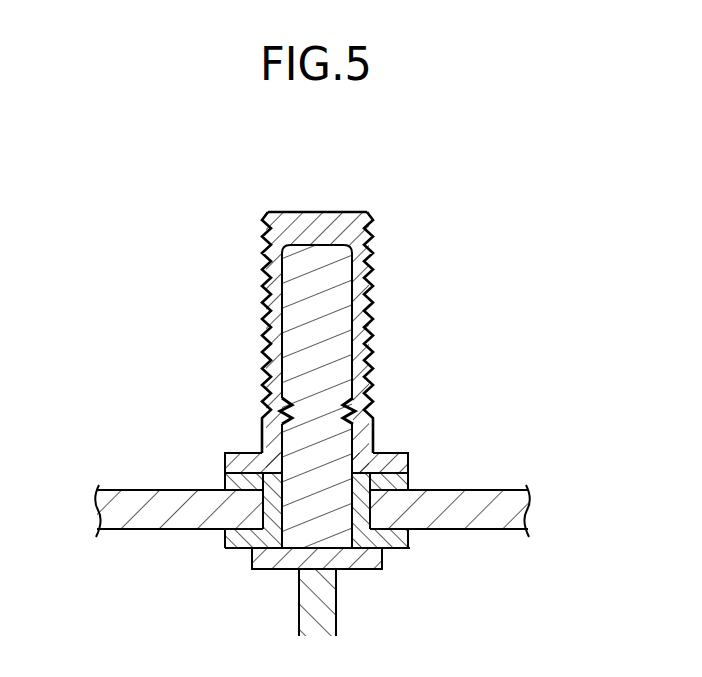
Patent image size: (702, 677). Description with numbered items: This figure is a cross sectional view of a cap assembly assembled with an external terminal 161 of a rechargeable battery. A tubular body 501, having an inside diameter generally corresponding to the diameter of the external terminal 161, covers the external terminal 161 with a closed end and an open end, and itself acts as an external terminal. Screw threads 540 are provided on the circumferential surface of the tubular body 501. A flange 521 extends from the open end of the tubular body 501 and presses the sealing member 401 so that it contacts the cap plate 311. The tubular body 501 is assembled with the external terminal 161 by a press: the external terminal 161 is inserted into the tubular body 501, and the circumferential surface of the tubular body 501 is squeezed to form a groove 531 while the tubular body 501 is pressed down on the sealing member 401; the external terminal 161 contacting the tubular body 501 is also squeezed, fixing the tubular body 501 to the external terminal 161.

The external terminal 161 is at (314, 265).
The screw threads 540 is at (372, 296).
The tubular body 501 is at (244, 430).
The groove 531 is at (373, 422).
The flange 521 is at (225, 459).
The sealing member 401 is at (409, 489).
The cap plate 311 is at (470, 518).